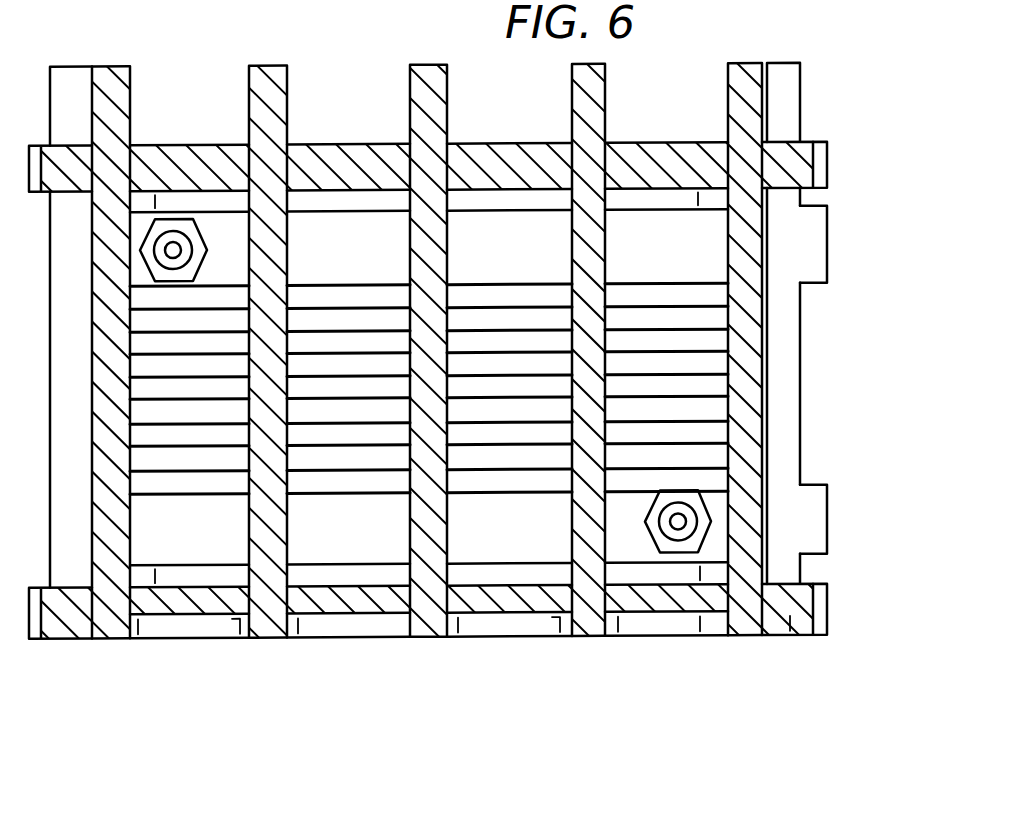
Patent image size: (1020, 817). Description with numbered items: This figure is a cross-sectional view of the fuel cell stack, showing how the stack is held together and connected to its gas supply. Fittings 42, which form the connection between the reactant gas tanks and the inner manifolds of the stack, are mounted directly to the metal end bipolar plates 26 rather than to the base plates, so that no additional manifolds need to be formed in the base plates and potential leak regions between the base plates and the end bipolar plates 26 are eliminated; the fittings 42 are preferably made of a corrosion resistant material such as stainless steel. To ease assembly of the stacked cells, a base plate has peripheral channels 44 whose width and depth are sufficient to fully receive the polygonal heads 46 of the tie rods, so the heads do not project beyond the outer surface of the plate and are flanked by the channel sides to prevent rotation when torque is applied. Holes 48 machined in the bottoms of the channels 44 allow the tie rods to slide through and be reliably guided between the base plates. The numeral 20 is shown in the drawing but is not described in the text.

The grating panel 20 is at (407, 264).
The end bipolar plate 26 is at (560, 548).
The fitting 42 is at (197, 234).
The peripheral channel 44 is at (220, 627).
The polygonal head 46 is at (417, 627).
The hole 48 is at (239, 552).